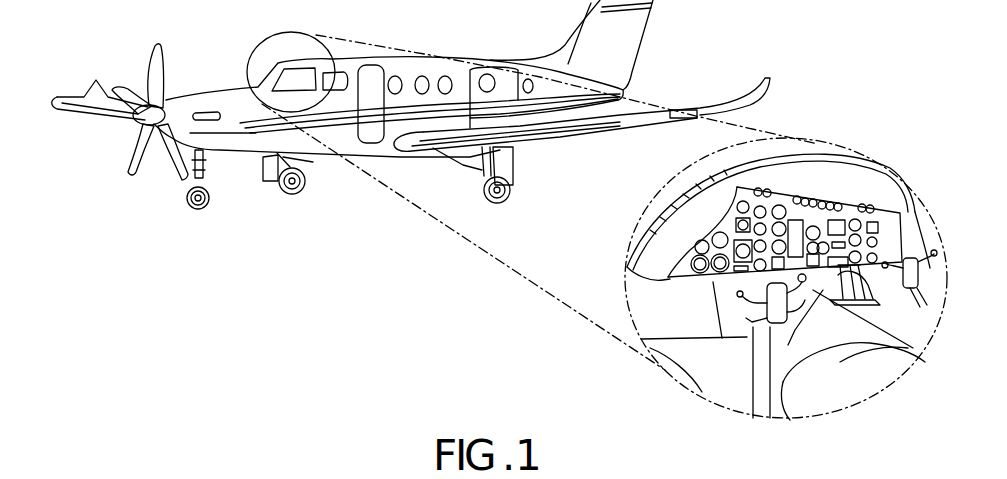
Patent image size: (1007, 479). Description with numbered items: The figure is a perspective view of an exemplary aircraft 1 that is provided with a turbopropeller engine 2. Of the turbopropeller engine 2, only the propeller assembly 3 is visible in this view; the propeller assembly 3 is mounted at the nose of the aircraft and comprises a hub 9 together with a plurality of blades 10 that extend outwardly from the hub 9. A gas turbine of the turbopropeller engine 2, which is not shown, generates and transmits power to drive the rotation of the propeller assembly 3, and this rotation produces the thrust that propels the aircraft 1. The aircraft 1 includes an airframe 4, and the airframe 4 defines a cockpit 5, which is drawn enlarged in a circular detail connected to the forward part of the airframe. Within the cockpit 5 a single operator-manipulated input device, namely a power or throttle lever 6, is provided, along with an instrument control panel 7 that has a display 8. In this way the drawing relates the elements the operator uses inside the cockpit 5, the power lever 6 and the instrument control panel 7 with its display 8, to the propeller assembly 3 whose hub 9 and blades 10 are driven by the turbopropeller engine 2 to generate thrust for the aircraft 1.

The aircraft 1 is at (152, 225).
The turbopropeller engine 2 is at (207, 208).
The propeller assembly 3 is at (127, 178).
The airframe 4 is at (445, 61).
The cockpit 5 is at (744, 163).
The power lever 6 is at (825, 287).
The instrument control panel 7 is at (790, 200).
The display 8 is at (853, 203).
The hub 9 is at (140, 122).
The blades 10 is at (130, 88).